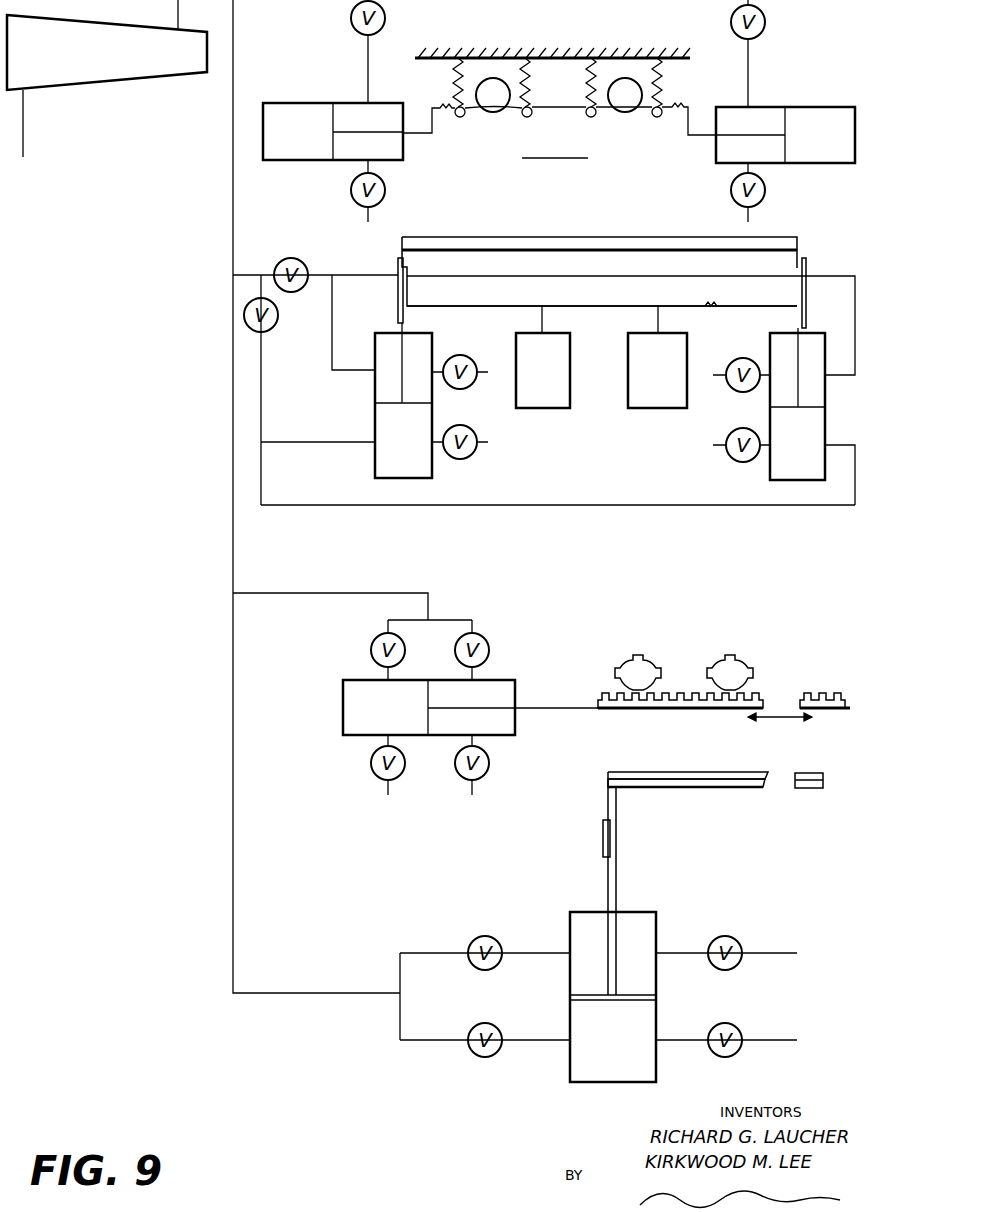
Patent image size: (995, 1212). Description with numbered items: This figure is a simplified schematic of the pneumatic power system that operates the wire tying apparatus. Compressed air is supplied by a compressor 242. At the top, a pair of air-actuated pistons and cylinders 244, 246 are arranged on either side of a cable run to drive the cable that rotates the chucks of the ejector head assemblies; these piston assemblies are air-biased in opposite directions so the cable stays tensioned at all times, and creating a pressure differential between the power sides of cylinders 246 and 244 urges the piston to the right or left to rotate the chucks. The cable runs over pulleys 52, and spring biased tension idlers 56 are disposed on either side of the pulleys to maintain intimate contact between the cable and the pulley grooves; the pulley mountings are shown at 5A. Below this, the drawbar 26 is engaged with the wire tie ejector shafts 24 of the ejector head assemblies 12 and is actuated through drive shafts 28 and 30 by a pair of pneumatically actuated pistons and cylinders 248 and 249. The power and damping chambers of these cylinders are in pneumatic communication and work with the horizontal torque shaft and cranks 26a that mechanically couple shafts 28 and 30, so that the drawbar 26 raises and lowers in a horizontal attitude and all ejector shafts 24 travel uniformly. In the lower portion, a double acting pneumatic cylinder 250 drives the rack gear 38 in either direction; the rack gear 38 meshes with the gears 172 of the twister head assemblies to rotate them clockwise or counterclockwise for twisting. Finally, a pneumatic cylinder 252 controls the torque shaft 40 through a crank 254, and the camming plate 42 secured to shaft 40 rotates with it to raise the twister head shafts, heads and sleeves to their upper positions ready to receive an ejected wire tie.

The compressor 242 is at (148, 82).
The pneumatic piston and cylinder 244 is at (325, 150).
The pneumatic piston and cylinder 246 is at (840, 97).
The spring biased tension idlers 56 is at (455, 77).
The pulleys 52 is at (497, 88).
The roller pivots 5A is at (508, 110).
The drawbar 26 is at (495, 303).
The torque shaft and cranks 26a is at (614, 238).
The drive shaft 28 is at (408, 318).
The drive shaft 30 is at (786, 330).
The wire tie ejector shaft 24 is at (657, 318).
The ejector head assembly 12 is at (560, 408).
The pneumatically actuated piston and cylinder 248 is at (428, 478).
The pneumatically actuated piston and cylinder 249 is at (775, 480).
The double acting pneumatic cylinder 250 is at (368, 697).
The gears 172 is at (720, 672).
The rack gear 38 is at (668, 708).
The camming plate 42 is at (692, 772).
The torque shaft 40 is at (705, 788).
The crank 254 is at (612, 840).
The pneumatic cylinder 252 is at (660, 921).